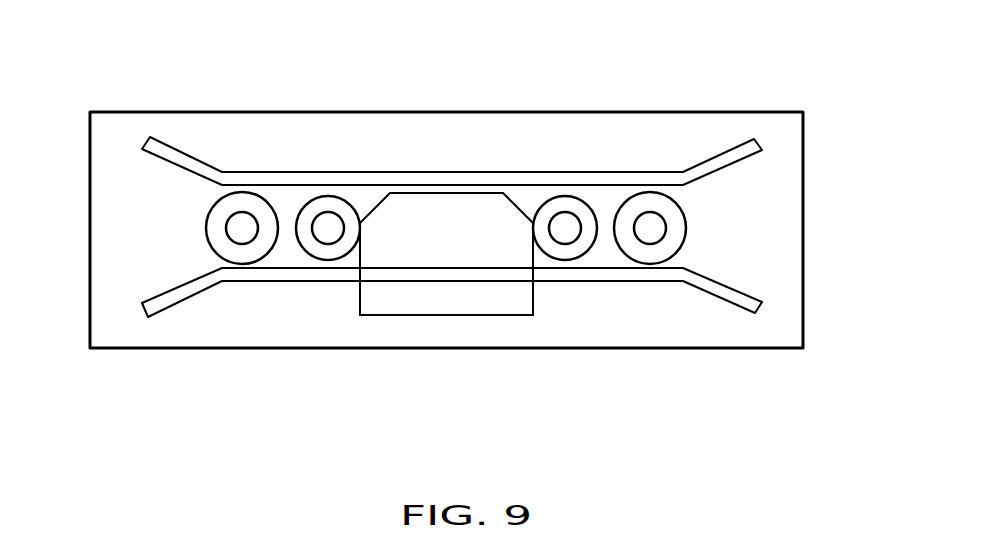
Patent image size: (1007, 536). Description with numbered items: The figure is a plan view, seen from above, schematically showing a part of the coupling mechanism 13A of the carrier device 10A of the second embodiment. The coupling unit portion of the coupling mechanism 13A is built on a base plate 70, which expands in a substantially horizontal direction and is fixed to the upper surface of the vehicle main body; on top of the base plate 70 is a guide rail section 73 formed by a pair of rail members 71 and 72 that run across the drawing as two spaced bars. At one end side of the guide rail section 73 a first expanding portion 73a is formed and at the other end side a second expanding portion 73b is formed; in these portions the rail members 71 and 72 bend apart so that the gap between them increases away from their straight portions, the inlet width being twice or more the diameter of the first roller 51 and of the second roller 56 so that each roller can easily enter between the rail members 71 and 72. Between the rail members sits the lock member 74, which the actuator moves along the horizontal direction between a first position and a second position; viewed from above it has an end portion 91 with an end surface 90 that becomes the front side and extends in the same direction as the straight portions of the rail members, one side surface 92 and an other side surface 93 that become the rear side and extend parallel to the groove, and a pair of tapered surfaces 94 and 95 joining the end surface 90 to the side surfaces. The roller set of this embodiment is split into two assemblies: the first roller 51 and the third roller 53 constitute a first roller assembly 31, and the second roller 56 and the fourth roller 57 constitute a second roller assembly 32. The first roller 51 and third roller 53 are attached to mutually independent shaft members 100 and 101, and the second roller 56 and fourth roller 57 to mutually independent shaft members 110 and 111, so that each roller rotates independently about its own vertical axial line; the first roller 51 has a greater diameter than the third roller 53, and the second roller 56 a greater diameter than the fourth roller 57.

The carrier device 10A is at (658, 83).
The coupling mechanism 13A is at (293, 160).
The base plate 70 is at (780, 250).
The rail member 71 is at (495, 275).
The rail member 72 is at (415, 172).
The guide rail section 73 is at (187, 145).
The first expanding portion 73a is at (720, 170).
The second expanding portion 73b is at (173, 170).
The lock member 74 is at (430, 298).
The end surface 90 is at (453, 192).
The end portion 91 is at (488, 210).
The one side surface 92 is at (536, 296).
The other side surface 93 is at (360, 296).
The tapered surface 94 is at (537, 207).
The tapered surface 95 is at (374, 206).
The first roller 51 is at (658, 205).
The third roller 53 is at (585, 205).
The second roller 56 is at (246, 206).
The fourth roller 57 is at (332, 205).
The shaft member 100 is at (650, 233).
The shaft member 101 is at (565, 233).
The shaft member 110 is at (243, 232).
The shaft member 111 is at (328, 232).
The first roller assembly 31 is at (634, 330).
The second roller assembly 32 is at (274, 332).